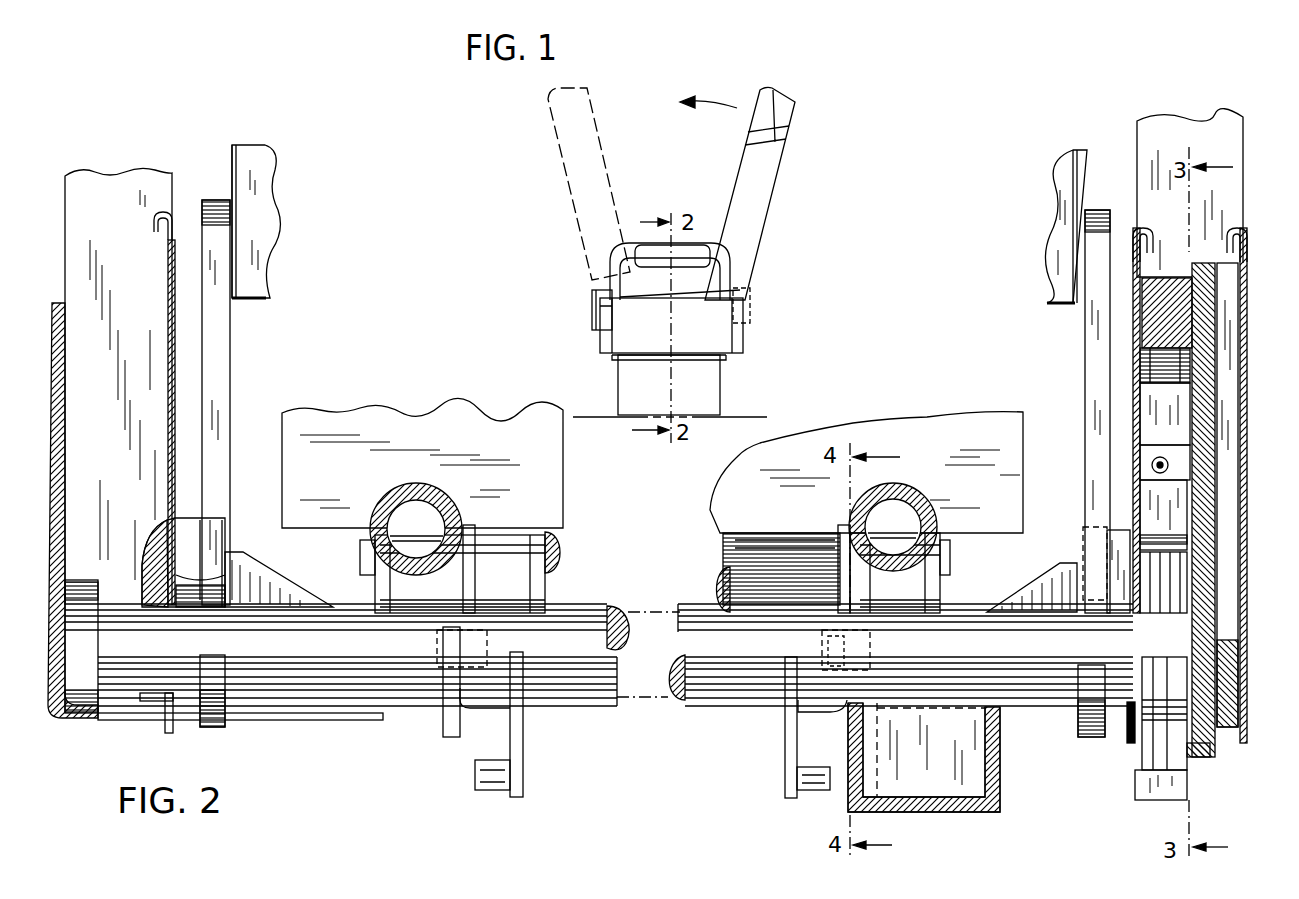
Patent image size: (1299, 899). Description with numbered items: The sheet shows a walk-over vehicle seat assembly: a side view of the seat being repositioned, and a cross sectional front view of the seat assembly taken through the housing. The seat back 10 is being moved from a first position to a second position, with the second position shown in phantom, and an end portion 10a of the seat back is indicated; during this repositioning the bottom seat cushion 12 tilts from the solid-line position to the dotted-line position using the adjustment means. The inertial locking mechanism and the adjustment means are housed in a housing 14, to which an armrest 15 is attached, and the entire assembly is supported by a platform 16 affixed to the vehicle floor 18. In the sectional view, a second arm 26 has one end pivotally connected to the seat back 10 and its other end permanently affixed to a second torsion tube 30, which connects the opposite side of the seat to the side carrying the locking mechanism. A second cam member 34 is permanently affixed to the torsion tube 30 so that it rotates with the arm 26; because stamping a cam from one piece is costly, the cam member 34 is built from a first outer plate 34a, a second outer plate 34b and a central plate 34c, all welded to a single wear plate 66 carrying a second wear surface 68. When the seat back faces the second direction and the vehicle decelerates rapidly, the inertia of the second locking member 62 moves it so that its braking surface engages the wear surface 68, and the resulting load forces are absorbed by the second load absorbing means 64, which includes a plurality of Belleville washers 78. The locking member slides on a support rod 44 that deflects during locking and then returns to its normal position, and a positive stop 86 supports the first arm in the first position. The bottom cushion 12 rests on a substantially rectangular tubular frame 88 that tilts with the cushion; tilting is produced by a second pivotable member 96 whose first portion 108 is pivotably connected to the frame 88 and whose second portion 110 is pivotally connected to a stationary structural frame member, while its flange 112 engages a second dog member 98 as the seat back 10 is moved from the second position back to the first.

In FIG. 1, the seat back 10 is at (560, 155).
In FIG. 2, the seat back 10 is at (257, 237).
In FIG. 1, the handle end portion 10a is at (762, 242).
In FIG. 1, the bottom seat cushion 12 is at (592, 316).
In FIG. 2, the bottom seat cushion 12 is at (391, 420).
In FIG. 1, the housing 14 is at (722, 343).
In FIG. 2, the housing 14 is at (1205, 287).
In FIG. 1, the armrest 15 is at (697, 247).
In FIG. 1, the platform 16 is at (633, 375).
In FIG. 2, the platform 16 is at (1227, 191).
In FIG. 1, the floor 18 is at (722, 426).
In FIG. 2, the second arm 26 is at (1090, 330).
In FIG. 2, the second torsion tube 30 is at (715, 674).
In FIG. 2, the second cam member 34 is at (1120, 796).
In FIG. 2, the first outer plate 34a is at (1176, 758).
In FIG. 2, the second outer plate 34b is at (1146, 750).
In FIG. 2, the central plate 34c is at (1160, 794).
In FIG. 2, the support rod 44 is at (1180, 505).
In FIG. 2, the second locking member 62 is at (1176, 456).
In FIG. 2, the second load absorbing means 64 is at (1200, 407).
In FIG. 2, the wear plate 66 is at (1176, 581).
In FIG. 2, the second wear surface 68 is at (1176, 538).
In FIG. 2, the Belleville washers 78 is at (1187, 360).
In FIG. 2, the positive stop 86 is at (1113, 533).
In FIG. 2, the tubular frame 88 is at (415, 485).
In FIG. 2, the second pivotable member 96 is at (830, 631).
In FIG. 2, the second dog member 98 is at (524, 779).
In FIG. 2, the first portion 108 is at (826, 568).
In FIG. 2, the second portion 110 is at (872, 640).
In FIG. 2, the flange 112 is at (835, 716).